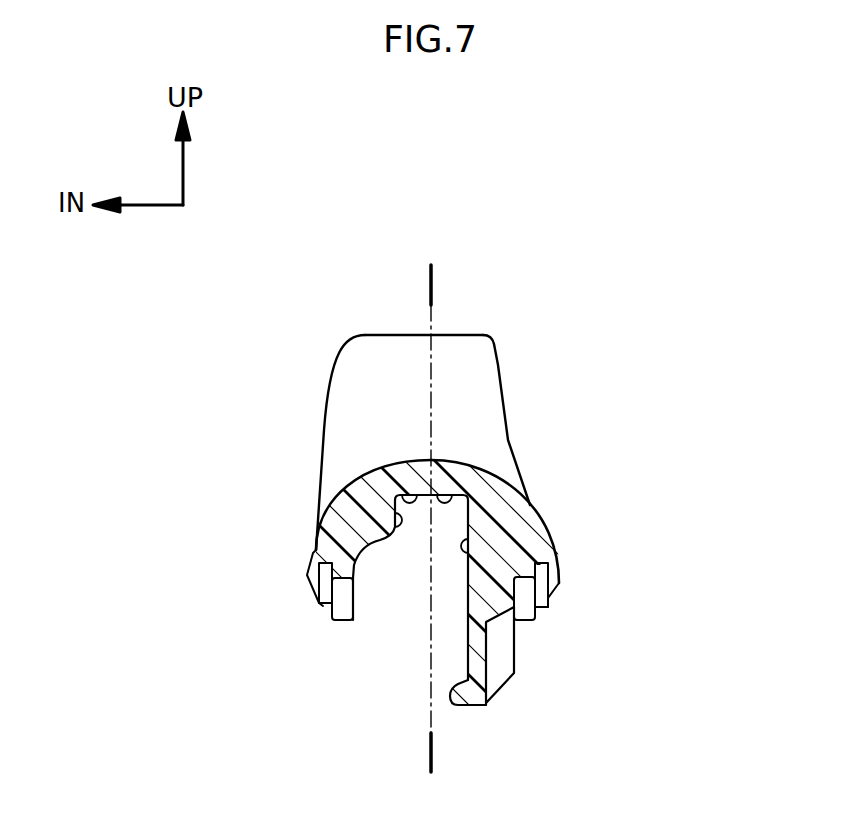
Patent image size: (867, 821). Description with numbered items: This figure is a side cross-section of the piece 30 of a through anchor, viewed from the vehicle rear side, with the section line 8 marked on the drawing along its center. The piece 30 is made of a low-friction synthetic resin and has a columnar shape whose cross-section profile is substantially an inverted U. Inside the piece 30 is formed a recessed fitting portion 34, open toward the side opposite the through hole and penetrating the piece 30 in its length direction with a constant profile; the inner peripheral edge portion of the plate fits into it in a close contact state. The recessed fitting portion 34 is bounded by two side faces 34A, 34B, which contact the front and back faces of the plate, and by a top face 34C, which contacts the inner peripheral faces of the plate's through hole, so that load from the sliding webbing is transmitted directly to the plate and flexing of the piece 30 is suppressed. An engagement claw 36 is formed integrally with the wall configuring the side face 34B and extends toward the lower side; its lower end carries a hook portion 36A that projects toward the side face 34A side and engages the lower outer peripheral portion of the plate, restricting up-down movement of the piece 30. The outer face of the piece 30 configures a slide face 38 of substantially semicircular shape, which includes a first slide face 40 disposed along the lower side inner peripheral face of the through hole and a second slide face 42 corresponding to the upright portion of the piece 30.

The section line 8- 8 is at (427, 283).
The piece 30 is at (417, 440).
The recessed fitting portion 34 is at (494, 559).
The side face 34A is at (390, 521).
The side face 34B is at (473, 544).
The top face 34C is at (373, 478).
The engagement claw 36 is at (423, 703).
The hook portion 36A is at (450, 698).
The slide face 38 is at (417, 477).
The first slide face 40 is at (498, 468).
The second slide face 42 is at (355, 383).